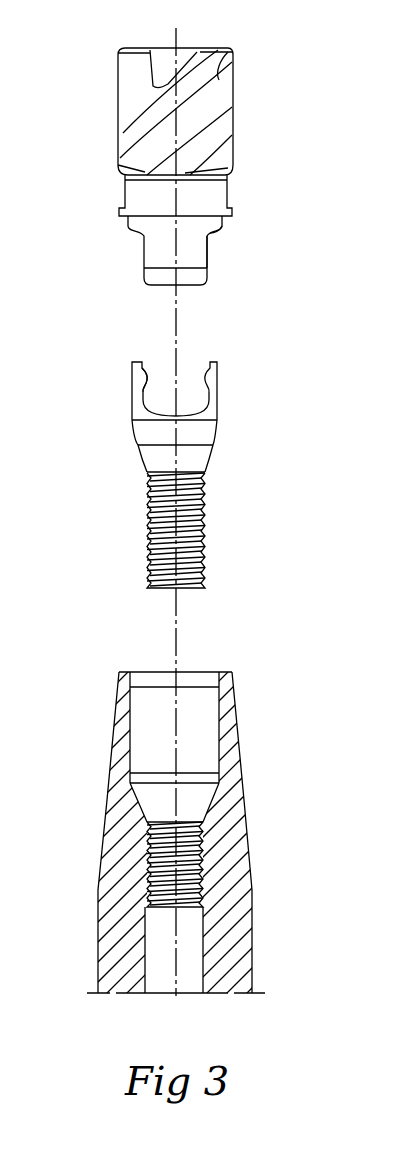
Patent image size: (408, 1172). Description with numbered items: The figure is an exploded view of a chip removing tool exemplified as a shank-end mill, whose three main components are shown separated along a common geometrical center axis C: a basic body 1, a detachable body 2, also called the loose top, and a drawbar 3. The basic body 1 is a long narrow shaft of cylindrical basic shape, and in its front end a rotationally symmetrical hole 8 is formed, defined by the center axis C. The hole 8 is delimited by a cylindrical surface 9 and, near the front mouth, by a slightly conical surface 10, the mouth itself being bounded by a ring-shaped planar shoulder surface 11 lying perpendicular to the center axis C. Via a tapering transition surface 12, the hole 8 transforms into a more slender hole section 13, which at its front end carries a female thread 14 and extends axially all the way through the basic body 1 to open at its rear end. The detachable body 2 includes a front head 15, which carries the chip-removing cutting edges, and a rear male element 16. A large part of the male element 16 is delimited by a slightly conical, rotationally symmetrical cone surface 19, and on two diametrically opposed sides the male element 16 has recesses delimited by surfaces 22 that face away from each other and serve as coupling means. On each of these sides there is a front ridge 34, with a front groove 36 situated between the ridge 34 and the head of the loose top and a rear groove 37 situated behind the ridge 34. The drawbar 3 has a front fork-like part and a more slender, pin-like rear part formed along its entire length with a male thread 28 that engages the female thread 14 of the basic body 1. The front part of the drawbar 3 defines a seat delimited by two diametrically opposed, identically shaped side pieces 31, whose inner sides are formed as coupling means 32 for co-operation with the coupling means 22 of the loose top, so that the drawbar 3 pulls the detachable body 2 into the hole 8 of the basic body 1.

The basic body 1 is at (81, 946).
The detachable body 2 is at (98, 56).
The drawbar 3 is at (240, 470).
The hole 8 is at (148, 653).
The cylindrical surface 9 is at (208, 742).
The conical surface 10 is at (195, 677).
The shoulder surface 11 is at (224, 672).
The transition surface 12 is at (147, 810).
The hole section 13 is at (197, 946).
The female thread 14 is at (197, 855).
The head 15 is at (97, 136).
The male element 16 is at (127, 283).
The cone surface 19 is at (125, 223).
The coupling means 22 is at (133, 249).
The male thread 28 is at (150, 530).
The side pieces 31 is at (133, 397).
The coupling means 32 is at (152, 383).
The front ridge 34 is at (208, 247).
The front groove 36 is at (212, 233).
The rear groove 37 is at (209, 258).
The center axis C is at (178, 316).